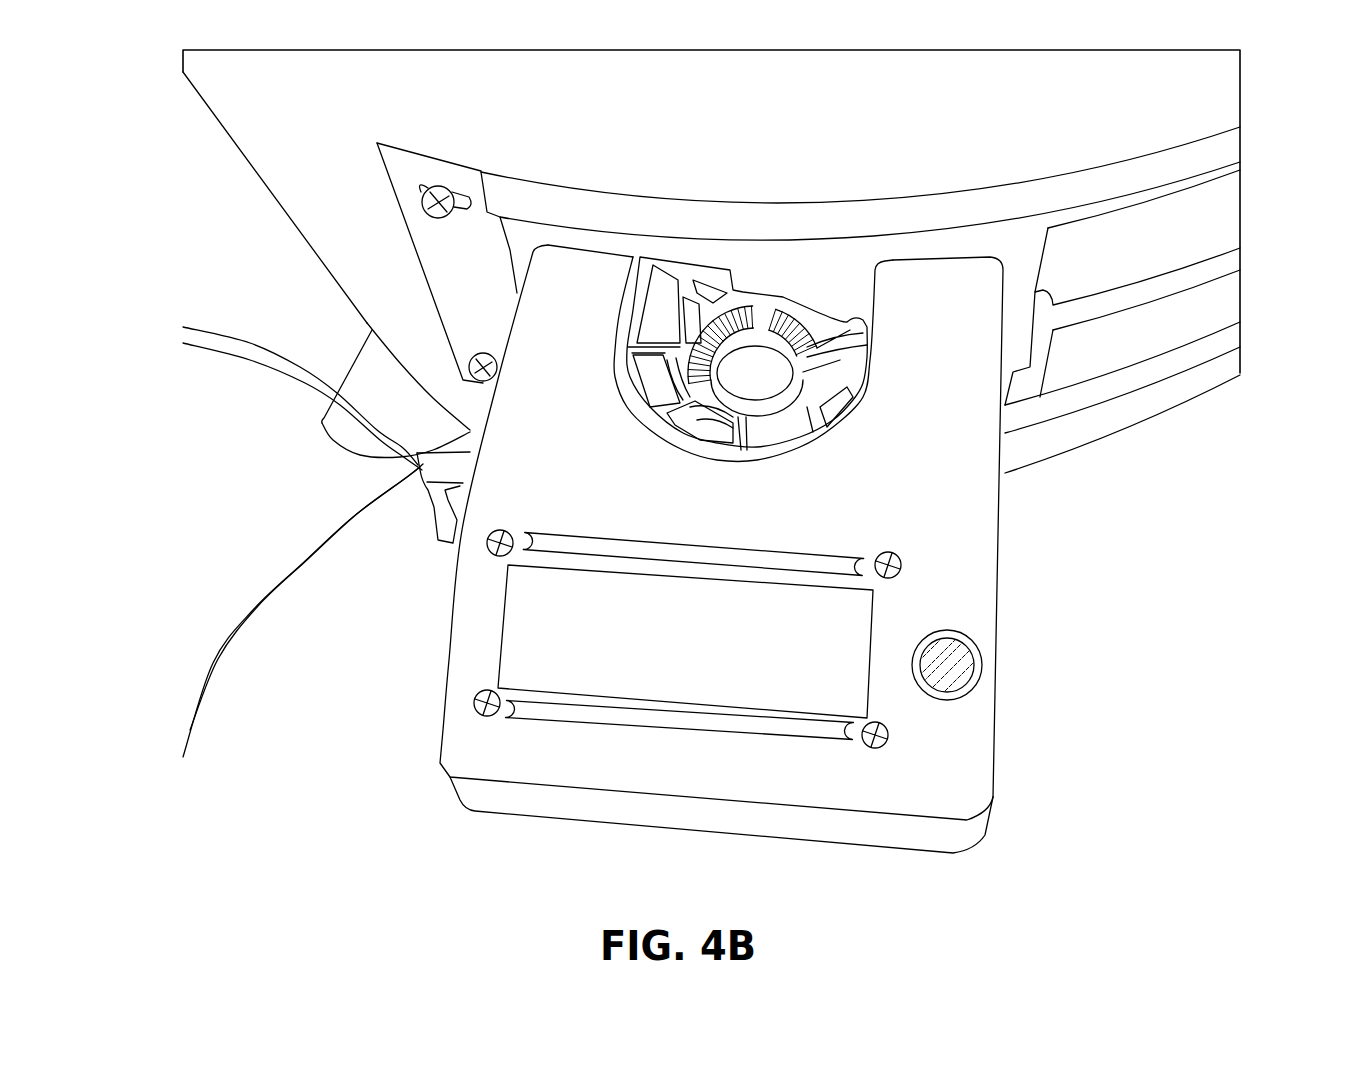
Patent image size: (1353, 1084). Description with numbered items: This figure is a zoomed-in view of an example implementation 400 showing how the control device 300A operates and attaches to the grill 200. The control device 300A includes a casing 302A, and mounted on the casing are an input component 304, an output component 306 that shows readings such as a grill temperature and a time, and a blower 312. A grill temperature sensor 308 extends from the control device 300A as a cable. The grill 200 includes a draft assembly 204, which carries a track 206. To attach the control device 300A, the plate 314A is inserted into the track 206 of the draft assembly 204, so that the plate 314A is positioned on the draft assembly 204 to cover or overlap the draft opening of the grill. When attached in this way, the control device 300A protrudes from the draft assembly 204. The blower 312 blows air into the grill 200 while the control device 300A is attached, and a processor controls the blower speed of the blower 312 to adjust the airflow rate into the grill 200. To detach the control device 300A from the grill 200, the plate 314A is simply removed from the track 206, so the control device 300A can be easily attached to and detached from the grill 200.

The example implementation 400 is at (183, 64).
The grill 200 is at (905, 287).
The track 206 is at (1212, 150).
The draft assembly 204 is at (452, 258).
The plate 314A is at (1013, 255).
The blower 312 is at (826, 405).
The control device 300A is at (785, 549).
The casing 302A is at (995, 613).
The input component 304 is at (968, 668).
The output component 306 is at (580, 596).
The grill temperature sensor 308 is at (325, 512).